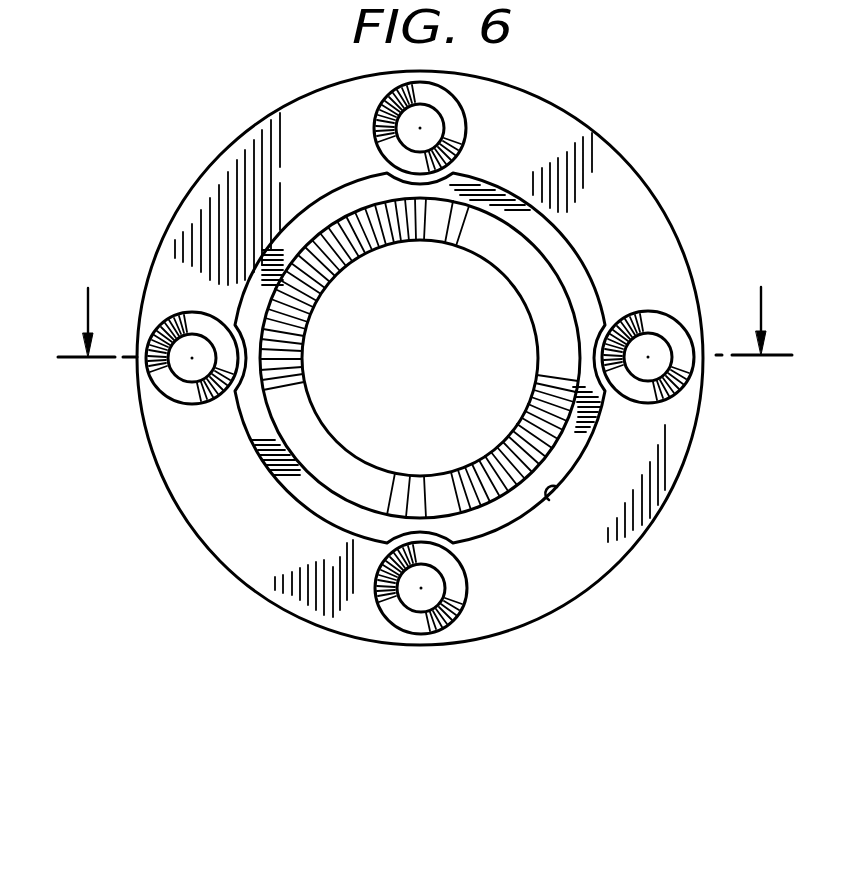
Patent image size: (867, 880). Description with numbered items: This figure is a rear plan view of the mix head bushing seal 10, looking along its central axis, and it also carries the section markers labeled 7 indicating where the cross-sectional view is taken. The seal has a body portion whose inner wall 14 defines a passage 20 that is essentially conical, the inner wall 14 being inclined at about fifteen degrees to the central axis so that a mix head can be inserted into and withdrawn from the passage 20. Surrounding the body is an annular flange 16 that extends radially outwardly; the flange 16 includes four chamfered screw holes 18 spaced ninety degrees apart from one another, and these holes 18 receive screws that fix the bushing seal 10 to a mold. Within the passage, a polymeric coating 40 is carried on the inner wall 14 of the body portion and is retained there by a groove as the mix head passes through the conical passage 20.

The mix head bushing seal 10 is at (618, 114).
The inner wall 14 is at (595, 278).
The annular flange 16 is at (240, 153).
The chamfered screw holes 18 is at (449, 103).
The passage 20 is at (549, 500).
The polymeric coating 40 is at (277, 481).
The section line 7- 7 is at (425, 298).